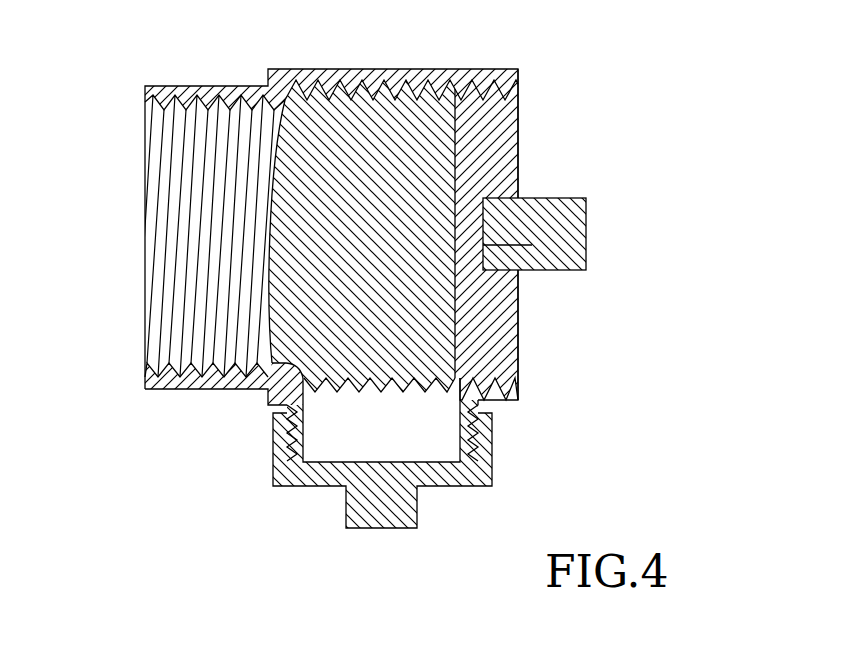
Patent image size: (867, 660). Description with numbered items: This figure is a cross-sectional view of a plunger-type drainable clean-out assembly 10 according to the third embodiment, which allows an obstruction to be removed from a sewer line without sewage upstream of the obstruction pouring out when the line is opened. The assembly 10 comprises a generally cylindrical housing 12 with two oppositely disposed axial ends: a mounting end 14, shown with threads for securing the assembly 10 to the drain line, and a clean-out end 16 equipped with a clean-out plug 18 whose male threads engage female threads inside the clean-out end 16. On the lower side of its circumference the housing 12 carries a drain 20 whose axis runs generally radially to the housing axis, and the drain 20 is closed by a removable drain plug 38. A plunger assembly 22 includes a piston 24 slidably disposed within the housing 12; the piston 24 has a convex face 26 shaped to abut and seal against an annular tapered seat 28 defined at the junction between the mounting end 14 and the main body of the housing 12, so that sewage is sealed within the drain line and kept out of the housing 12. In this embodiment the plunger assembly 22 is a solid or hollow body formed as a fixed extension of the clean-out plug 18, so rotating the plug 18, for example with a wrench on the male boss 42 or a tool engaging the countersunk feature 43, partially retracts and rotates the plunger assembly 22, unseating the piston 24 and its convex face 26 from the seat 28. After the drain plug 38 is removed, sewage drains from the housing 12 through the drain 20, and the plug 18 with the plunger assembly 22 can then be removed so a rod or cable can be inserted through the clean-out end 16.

The clean-out assembly 10 is at (612, 171).
The housing 12 is at (418, 70).
The mounting end 14 is at (178, 390).
The clean-out end 16 is at (487, 73).
The clean-out plug 18 is at (512, 135).
The drain 20 is at (272, 432).
The plunger assembly 22 is at (430, 333).
The piston 24 is at (297, 145).
The convex face 26 is at (270, 298).
The tapered seat 28 is at (348, 385).
The drain plug 38 is at (492, 455).
The boss 42 is at (586, 243).
The countersunk feature 43 is at (500, 247).